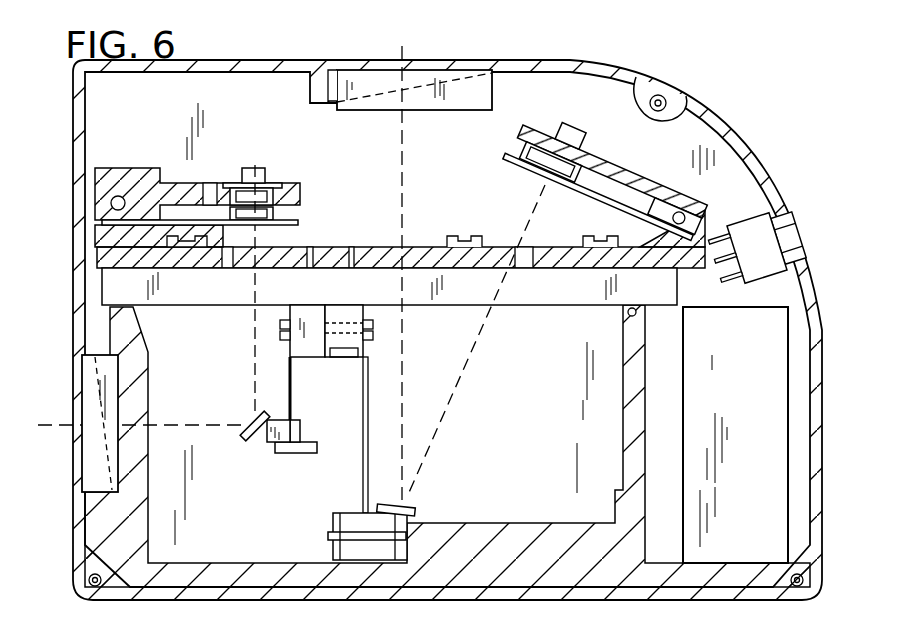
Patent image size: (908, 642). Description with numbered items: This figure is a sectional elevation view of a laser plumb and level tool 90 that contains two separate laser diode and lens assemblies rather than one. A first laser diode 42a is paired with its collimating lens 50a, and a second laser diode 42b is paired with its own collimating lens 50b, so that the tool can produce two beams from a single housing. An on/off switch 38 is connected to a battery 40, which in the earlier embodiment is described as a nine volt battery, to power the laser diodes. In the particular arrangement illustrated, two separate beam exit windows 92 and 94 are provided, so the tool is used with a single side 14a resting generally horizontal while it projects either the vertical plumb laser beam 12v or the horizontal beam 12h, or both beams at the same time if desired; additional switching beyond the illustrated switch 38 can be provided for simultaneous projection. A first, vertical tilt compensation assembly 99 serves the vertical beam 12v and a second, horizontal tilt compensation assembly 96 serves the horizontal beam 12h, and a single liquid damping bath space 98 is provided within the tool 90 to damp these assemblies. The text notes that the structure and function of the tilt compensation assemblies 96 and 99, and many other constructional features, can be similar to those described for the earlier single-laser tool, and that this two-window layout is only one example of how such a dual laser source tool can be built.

The laser plumb and level tool 90 is at (740, 105).
The single side 14a is at (727, 603).
The beam exit window 92 is at (383, 58).
The vertical plumb laser beam 12v is at (410, 52).
The laser diode 42a is at (548, 122).
The lens 50a is at (530, 168).
The laser diode 42b is at (280, 172).
The lens 50b is at (300, 225).
The on/off switch 38 is at (797, 242).
The battery 40 is at (753, 382).
The liquid damping bath space 98 is at (561, 404).
The second (horizontal) tilt compensation assembly 96 is at (252, 418).
The first (vertical) tilt compensation assembly 99 is at (417, 497).
The horizontal beam 12h is at (52, 420).
The beam exit window 94 is at (72, 447).